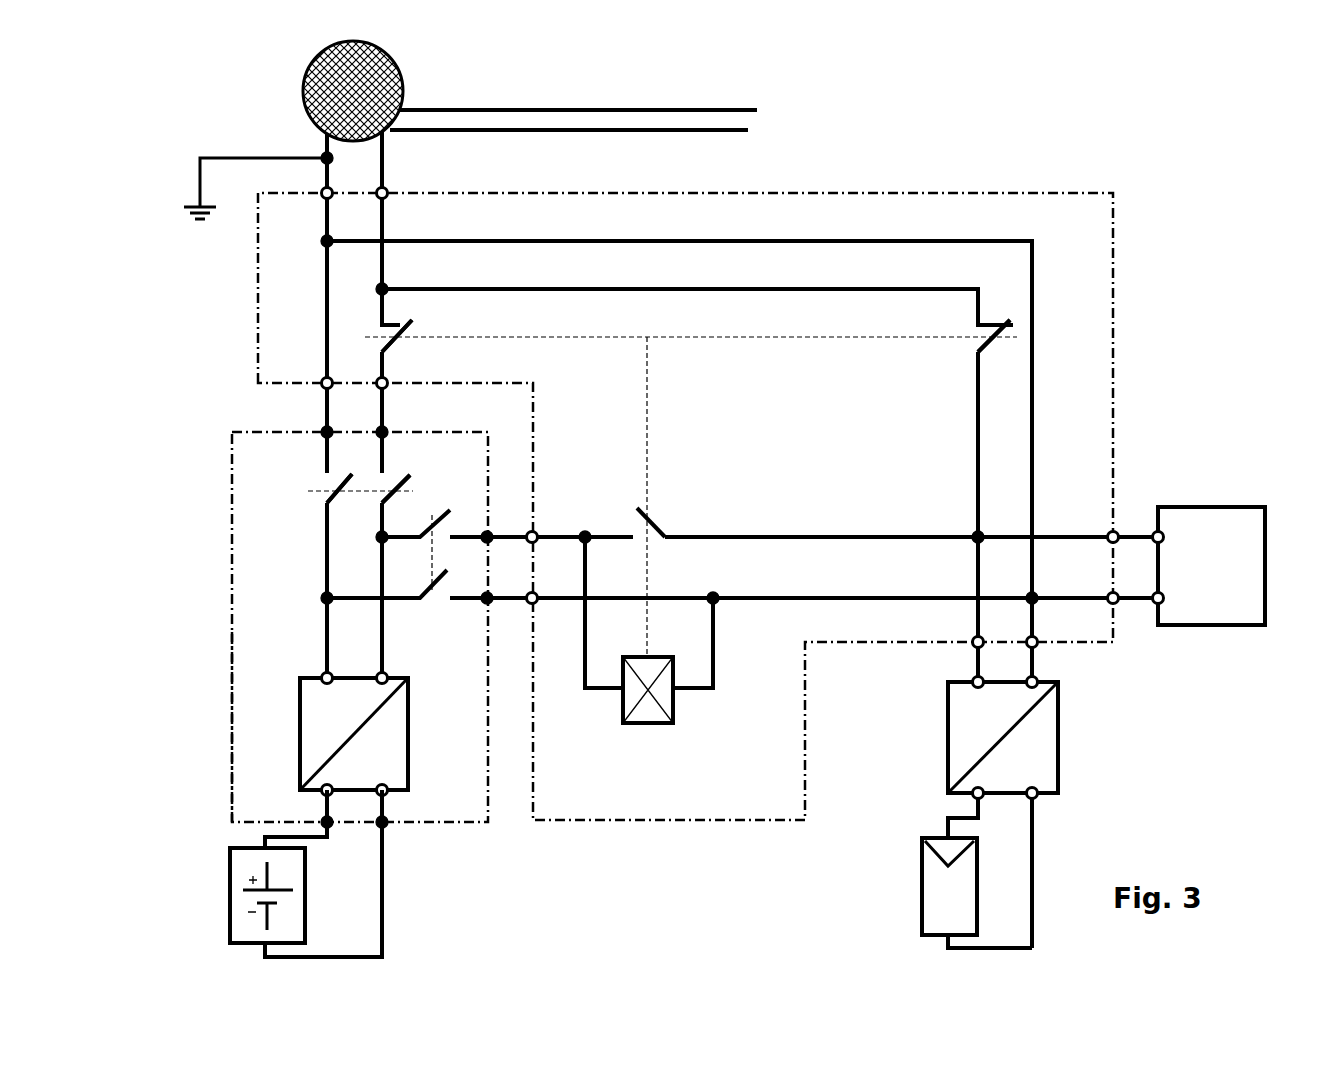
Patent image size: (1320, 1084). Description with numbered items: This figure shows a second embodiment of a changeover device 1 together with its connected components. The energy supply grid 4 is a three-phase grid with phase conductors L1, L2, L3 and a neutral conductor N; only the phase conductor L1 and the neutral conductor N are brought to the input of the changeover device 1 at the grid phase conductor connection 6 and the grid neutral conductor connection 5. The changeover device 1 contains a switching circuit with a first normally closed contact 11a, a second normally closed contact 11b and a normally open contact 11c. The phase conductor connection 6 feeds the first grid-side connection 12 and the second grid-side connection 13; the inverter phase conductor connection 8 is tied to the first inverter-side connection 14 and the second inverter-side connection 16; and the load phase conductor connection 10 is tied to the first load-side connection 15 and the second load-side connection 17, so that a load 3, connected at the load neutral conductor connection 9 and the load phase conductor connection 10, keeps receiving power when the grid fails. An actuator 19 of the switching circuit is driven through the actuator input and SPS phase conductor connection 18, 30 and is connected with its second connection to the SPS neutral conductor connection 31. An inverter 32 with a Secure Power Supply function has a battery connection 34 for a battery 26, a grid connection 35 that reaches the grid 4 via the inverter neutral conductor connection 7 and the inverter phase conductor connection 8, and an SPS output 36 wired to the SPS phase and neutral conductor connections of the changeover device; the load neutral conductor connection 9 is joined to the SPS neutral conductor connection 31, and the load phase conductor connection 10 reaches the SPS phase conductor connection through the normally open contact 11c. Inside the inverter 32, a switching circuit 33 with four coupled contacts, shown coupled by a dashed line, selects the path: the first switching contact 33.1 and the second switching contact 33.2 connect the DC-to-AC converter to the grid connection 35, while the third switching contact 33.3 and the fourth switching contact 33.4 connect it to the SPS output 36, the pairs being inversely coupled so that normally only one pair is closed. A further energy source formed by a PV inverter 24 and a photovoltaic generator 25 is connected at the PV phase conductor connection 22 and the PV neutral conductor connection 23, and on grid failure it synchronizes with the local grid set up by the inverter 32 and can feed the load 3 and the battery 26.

The changeover device 1 is at (799, 184).
The load 3 is at (1209, 566).
The energy supply grid 4 is at (405, 93).
The grid neutral conductor connection 5 is at (323, 198).
The grid phase conductor connection 6 is at (388, 198).
The inverter neutral conductor connection 7 is at (320, 388).
The inverter phase conductor connection 8 is at (388, 389).
The load neutral conductor connection 9 is at (1118, 603).
The load phase conductor connection 10 is at (1118, 532).
The first normally closed contact 11a is at (412, 335).
The second normally closed contact 11b is at (968, 336).
The normally open contact 11c is at (657, 506).
The first grid-side connection 12 is at (385, 272).
The second grid-side connection 13 is at (983, 307).
The first inverter-side connection 14 is at (386, 365).
The first load-side connection 15 is at (972, 365).
The second inverter-side connection 16 is at (622, 535).
The second load-side connection 17 is at (683, 535).
The phase terminal 18, 30 is at (536, 532).
The actuator 19 is at (652, 727).
The PV phase conductor connection 22 is at (973, 647).
The PV neutral conductor connection 23 is at (1038, 647).
The PV inverter 24 is at (1060, 738).
The photovoltaic generator 25 is at (920, 888).
The battery 26 is at (225, 898).
The SPS neutral conductor connection 31 is at (530, 603).
The inverter 32 is at (230, 627).
The switching circuit 33 is at (275, 508).
The first switching contact 33.1 is at (302, 515).
The second switching contact 33.2 is at (366, 514).
The third switching contact 33.3 is at (446, 500).
The fourth switching contact 33.4 is at (439, 596).
The battery connection 34 is at (362, 836).
The grid connection 35 is at (353, 435).
The SPS output 36 is at (492, 562).
The neutral conductor N is at (316, 131).
The phase conductor L1 is at (386, 152).
The phase conductor L2 is at (490, 133).
The phase conductor L3 is at (553, 108).
The protective earth PE is at (235, 189).